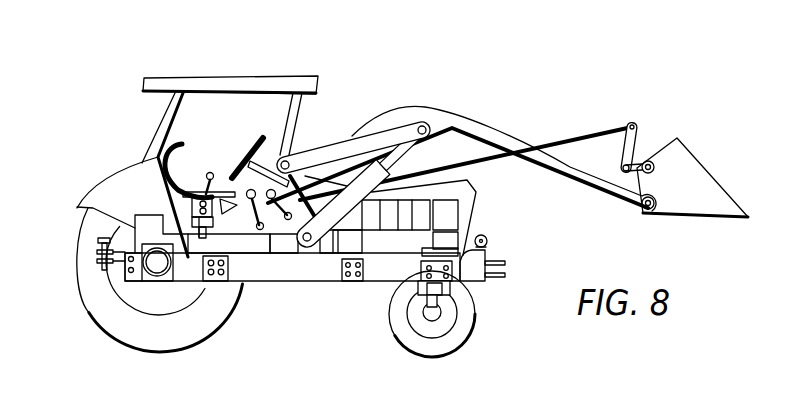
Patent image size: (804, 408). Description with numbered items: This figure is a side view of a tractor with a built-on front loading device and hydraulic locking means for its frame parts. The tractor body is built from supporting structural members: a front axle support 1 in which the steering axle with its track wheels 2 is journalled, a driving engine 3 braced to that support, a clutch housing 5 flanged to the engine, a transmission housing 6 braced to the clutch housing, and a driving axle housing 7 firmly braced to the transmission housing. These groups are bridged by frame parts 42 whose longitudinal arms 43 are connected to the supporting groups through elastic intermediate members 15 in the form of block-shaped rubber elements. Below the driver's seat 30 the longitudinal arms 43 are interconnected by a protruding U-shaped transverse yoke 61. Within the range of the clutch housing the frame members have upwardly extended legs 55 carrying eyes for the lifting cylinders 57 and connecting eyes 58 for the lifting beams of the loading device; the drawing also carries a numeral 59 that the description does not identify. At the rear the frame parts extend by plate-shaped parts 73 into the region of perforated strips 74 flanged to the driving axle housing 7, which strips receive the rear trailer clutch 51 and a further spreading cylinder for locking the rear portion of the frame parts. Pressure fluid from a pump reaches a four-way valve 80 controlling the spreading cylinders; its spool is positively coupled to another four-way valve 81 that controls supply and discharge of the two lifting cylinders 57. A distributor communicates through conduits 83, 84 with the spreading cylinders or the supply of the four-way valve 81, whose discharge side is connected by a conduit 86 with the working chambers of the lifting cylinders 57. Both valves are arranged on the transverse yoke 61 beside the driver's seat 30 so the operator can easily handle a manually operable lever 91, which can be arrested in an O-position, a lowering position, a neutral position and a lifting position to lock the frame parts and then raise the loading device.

The front axle support 1 is at (460, 286).
The track wheels 2 is at (445, 345).
The driving engine 3 is at (387, 243).
The clutch housing 5 is at (331, 238).
The transmission housing 6 is at (260, 256).
The driving axle housing 7 is at (143, 276).
The elastic intermediate members 15 is at (215, 281).
The driver's seat 30 is at (165, 158).
The frame parts 42 is at (192, 272).
The longitudinal arms 43 is at (285, 272).
The rear trailer clutch 51 is at (102, 272).
The legs 55 is at (289, 104).
The lifting cylinders 57 is at (362, 177).
The connecting eyes 58 is at (524, 116).
The loader boom arm 59 is at (383, 122).
The U-shaped transverse yoke 61 is at (172, 176).
The plate-shaped parts 73 is at (130, 236).
The perforated strips 74 is at (130, 279).
The four-way valve 80 is at (222, 193).
The four-way valve 81 is at (195, 192).
The conduit 83 is at (143, 214).
The conduit 84 is at (407, 258).
The conduit 86 is at (308, 260).
The manually operable lever 91 is at (212, 172).